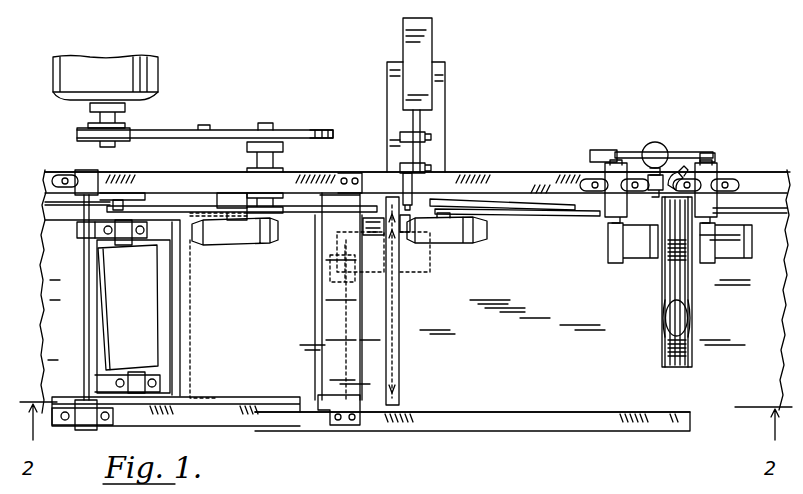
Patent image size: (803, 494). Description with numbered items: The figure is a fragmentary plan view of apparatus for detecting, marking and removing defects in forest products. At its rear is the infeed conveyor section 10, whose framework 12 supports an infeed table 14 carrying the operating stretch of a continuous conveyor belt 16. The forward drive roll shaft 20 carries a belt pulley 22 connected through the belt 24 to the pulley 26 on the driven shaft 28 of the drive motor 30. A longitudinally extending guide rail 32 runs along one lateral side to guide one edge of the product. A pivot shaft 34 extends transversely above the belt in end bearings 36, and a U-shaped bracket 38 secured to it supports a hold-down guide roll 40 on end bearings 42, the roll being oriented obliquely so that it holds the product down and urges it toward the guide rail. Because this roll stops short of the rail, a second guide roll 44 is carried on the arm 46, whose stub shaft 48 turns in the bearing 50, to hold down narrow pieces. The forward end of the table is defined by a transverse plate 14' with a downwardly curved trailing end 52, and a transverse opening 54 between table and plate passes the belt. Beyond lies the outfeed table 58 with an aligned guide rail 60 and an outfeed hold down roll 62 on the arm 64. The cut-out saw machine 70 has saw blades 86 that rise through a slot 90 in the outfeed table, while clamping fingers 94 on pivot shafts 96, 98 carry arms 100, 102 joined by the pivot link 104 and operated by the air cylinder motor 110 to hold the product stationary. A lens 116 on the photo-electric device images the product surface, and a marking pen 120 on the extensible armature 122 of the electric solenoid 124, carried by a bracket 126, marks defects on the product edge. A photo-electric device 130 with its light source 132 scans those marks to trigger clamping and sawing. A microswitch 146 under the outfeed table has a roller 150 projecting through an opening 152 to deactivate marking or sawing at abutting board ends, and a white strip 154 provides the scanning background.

The forest product infeed conveyor section 10 is at (226, 80).
The framework 12 is at (50, 178).
The infeed table 14 is at (176, 426).
The transverse plate 14' is at (340, 314).
The continuous conveyor belt 16 is at (42, 250).
The forward drive roll shaft 20 is at (265, 123).
The belt pulley 22 is at (333, 129).
The belt 24 is at (185, 130).
The pulley 26 is at (78, 130).
The driven shaft 28 is at (118, 118).
The drive motor 30 is at (86, 56).
The guide rail 32 is at (300, 206).
The pivot shaft 34 is at (84, 342).
The end bearings 36 is at (82, 172).
The U-shaped bracket 38 is at (177, 308).
The hold-down guide roll 40 is at (117, 305).
The end bearings 42 is at (125, 246).
The second guide roll 44 is at (232, 236).
The arm 46 is at (182, 212).
The stub shaft 48 is at (117, 199).
The bearing 50 is at (143, 194).
The trailing end 52 is at (315, 404).
The transverse opening 54 is at (228, 197).
The outfeed table 58 is at (480, 415).
The guide rail 60 is at (588, 215).
The outfeed hold down roll 62 is at (453, 235).
The arm 64 is at (495, 208).
The cut-out saw machine 70 is at (626, 330).
The saw blades 86 is at (675, 358).
The slot 90 is at (665, 355).
The clamping fingers 94 is at (640, 263).
The pivot shaft 96 is at (725, 166).
The pivot shaft 98 is at (605, 167).
The arm 100 is at (716, 157).
The arm 102 is at (592, 155).
The pivot link 104 is at (622, 152).
The air cylinder motor 110 is at (655, 142).
The lens 116 is at (418, 283).
The marking pen 120 is at (403, 190).
The extensible armature 122 is at (423, 124).
The electric solenoid 124 is at (418, 43).
The bracket 126 is at (450, 83).
The photo-electric device 130 is at (656, 176).
The light source 132 is at (688, 184).
The microswitch 146 is at (430, 274).
The roller 150 is at (362, 226).
The opening 152 is at (382, 240).
The white strip 154 is at (400, 336).